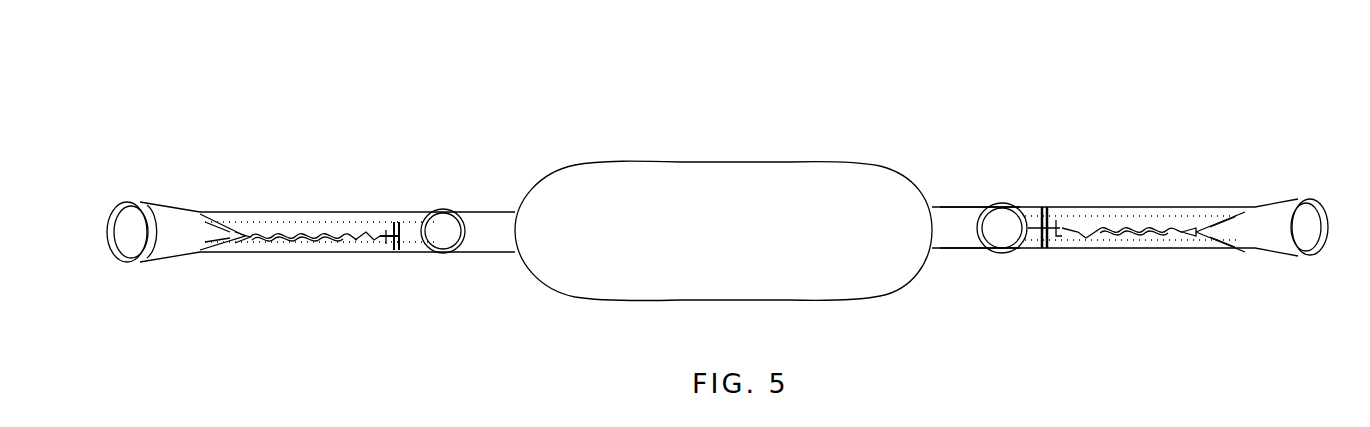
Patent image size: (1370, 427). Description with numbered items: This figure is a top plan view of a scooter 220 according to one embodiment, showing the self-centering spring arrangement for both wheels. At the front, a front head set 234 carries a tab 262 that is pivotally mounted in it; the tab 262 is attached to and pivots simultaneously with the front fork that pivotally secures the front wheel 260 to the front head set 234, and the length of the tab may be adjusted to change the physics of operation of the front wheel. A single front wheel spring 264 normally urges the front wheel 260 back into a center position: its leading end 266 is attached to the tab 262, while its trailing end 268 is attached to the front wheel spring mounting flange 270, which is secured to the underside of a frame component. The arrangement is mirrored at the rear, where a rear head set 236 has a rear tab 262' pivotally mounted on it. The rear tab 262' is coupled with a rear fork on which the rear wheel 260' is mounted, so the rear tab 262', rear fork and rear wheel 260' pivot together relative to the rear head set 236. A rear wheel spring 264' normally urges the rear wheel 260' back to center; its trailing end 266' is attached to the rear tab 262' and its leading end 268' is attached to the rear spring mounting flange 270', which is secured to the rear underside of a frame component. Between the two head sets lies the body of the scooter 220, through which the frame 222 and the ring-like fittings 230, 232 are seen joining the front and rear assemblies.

The scooter 220 is at (612, 145).
The tubular shaft 222 is at (955, 238).
The proximal marker ring 230 is at (998, 208).
The distal marker ring 232 is at (443, 222).
The front head set 234 is at (1290, 205).
The rear head set 236 is at (135, 238).
The front wheel 260 is at (1132, 160).
The rear wheel 260' is at (320, 172).
The tab 262 is at (1220, 169).
The rear tab 262' is at (209, 164).
The front wheel spring 264 is at (1140, 310).
The rear wheel spring 264' is at (303, 293).
The leading end 266 is at (1214, 305).
The trailing end 266' is at (229, 290).
The trailing end 268 is at (1079, 309).
The leading end 268' is at (389, 292).
The front wheel spring mounting flange 270 is at (1032, 163).
The rear spring mounting flange 270' is at (403, 176).